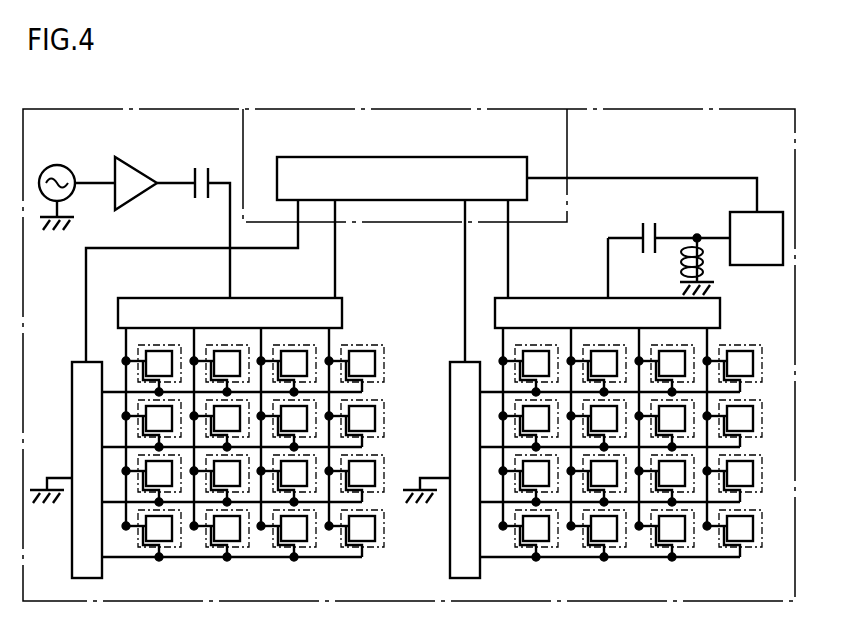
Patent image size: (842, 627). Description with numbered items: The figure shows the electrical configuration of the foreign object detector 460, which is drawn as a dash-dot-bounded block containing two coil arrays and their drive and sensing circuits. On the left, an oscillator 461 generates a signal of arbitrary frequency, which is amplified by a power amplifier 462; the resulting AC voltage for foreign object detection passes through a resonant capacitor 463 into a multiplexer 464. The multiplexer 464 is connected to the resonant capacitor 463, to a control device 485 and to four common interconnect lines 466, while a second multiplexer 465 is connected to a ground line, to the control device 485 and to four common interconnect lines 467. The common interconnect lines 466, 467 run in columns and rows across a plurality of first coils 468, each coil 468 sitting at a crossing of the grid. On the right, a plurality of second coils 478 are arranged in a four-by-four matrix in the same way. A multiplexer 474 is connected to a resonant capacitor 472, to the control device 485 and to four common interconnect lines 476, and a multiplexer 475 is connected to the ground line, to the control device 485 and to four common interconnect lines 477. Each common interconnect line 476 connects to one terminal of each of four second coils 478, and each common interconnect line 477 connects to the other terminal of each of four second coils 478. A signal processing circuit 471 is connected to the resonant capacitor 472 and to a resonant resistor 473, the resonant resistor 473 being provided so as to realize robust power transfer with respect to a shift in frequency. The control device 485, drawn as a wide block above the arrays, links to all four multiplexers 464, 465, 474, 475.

The foreign object detector 460 is at (583, 109).
The oscillator 461 is at (57, 165).
The power amplifier 462 is at (138, 170).
The resonant capacitor 463 is at (209, 168).
The multiplexer 464 is at (148, 298).
The multiplexer 465 is at (72, 398).
The common interconnect line 466 is at (198, 298).
The common interconnect line 467 is at (117, 447).
The first coil 468 is at (387, 363).
The signal processing circuit 471 is at (770, 212).
The resonant capacitor 472 is at (641, 230).
The resonant resistor 473 is at (682, 258).
The multiplexer 474 is at (534, 298).
The multiplexer 475 is at (450, 398).
The common interconnect line 476 is at (576, 298).
The common interconnect line 477 is at (495, 447).
The second coil 478 is at (764, 357).
The control device 485 is at (417, 157).